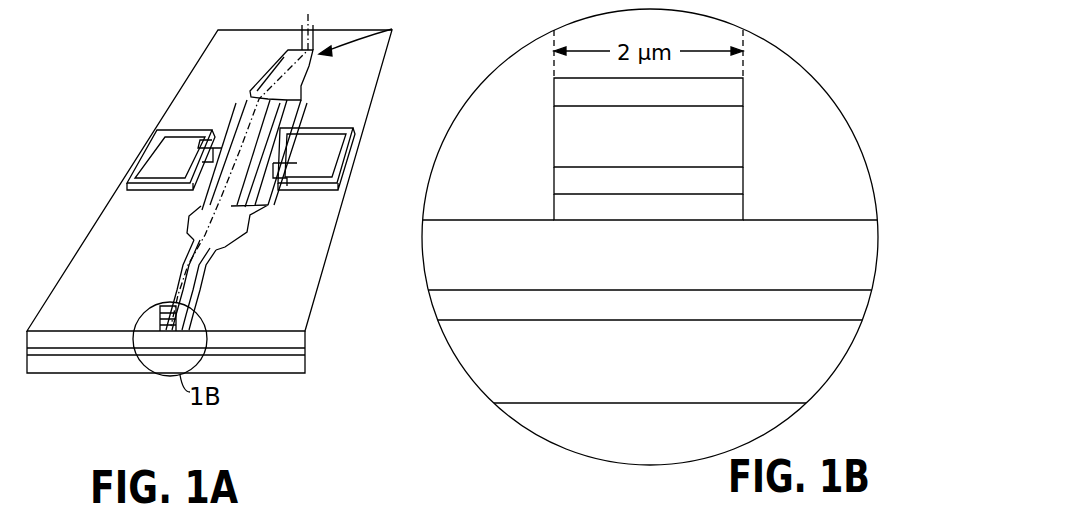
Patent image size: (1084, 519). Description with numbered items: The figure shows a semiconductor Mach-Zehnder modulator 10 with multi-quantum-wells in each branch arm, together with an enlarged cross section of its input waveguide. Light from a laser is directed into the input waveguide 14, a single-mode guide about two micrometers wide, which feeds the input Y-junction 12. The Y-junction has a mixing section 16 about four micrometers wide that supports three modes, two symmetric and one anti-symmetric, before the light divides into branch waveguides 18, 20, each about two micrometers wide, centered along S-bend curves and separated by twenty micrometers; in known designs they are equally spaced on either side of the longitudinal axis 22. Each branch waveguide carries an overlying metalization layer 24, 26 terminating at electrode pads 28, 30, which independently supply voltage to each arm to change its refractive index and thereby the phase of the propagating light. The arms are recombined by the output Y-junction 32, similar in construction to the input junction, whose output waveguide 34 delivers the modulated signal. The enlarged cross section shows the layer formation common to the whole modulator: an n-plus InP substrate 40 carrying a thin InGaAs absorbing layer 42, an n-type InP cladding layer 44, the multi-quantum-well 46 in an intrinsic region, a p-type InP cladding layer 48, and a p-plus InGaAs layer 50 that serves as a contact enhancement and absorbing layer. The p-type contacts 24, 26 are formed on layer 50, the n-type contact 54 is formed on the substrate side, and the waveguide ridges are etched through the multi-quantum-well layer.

In FIG. 1A, the modulator 10 is at (148, 113).
In FIG. 1A, the input Y-junction 12 is at (174, 246).
In FIG. 1A, the input waveguide 14 is at (198, 287).
In FIG. 1A, the mixing section 16 is at (206, 250).
In FIG. 1A, the branch waveguide 18 is at (195, 203).
In FIG. 1A, the branch waveguide 20 is at (236, 207).
In FIG. 1A, the longitudinal axis 22 is at (283, 62).
In FIG. 1A, the metalization layer 24 is at (247, 107).
In FIG. 1A, the metalization layer 26 is at (283, 118).
In FIG. 1A, the electrode pad 28 is at (325, 143).
In FIG. 1A, the electrode pad 30 is at (172, 163).
In FIG. 1A, the output Y-junction 32 is at (392, 29).
In FIG. 1A, the output waveguide 34 is at (315, 20).
In FIG. 1B, the n+ InP substrate 40 is at (482, 350).
In FIG. 1B, the InGaAs absorbing layer 42 is at (453, 306).
In FIG. 1B, the n-type InP cladding layer 44 is at (445, 260).
In FIG. 1B, the multi-quantum-well 46 is at (726, 183).
In FIG. 1B, the p-type InP cladding layer 48 is at (732, 137).
In FIG. 1B, the p+ InGaAs layer 50 is at (730, 90).
In FIG. 1A, the n-type contact 54 is at (97, 374).
In FIG. 1B, the n-type contact 54 is at (530, 420).